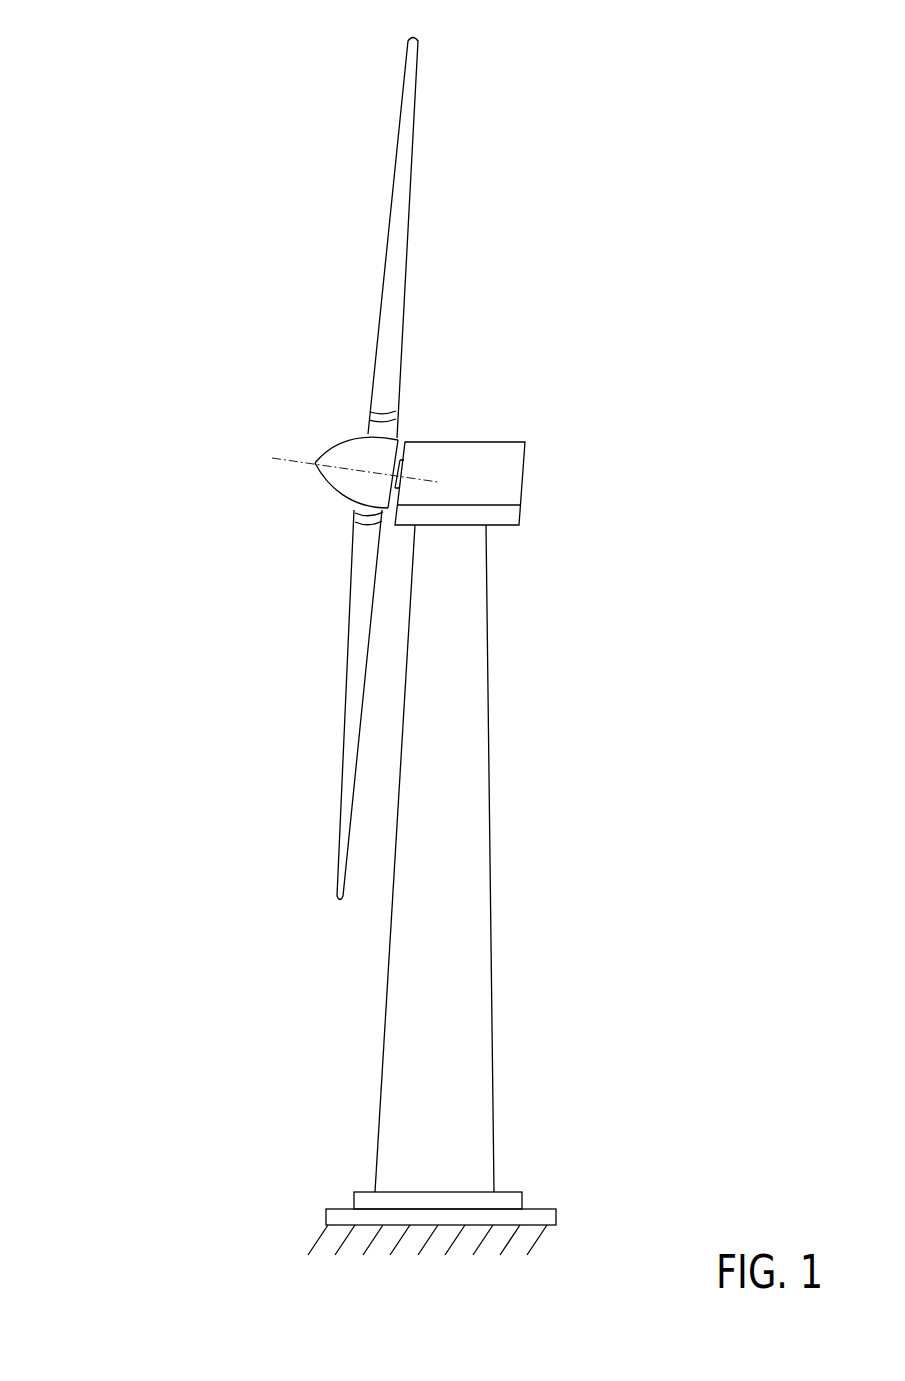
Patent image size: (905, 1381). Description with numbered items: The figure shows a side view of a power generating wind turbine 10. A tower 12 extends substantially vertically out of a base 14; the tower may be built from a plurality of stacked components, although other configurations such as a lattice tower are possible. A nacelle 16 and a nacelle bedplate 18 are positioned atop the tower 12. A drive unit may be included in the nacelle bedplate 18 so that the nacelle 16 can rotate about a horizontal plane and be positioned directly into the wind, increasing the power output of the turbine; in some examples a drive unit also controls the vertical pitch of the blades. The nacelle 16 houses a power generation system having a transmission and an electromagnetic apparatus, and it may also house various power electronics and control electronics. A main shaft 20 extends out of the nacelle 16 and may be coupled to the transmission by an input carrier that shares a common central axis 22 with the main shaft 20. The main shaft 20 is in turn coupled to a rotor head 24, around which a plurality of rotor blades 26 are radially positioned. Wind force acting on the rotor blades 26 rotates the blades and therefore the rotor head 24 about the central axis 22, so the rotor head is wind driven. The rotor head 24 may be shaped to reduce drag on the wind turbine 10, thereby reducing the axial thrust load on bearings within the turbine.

The power generating wind turbine 10 is at (128, 62).
The tower 12 is at (492, 1017).
The base 14 is at (540, 1209).
The nacelle 16 is at (466, 442).
The nacelle bedplate 18 is at (519, 514).
The main shaft 20 is at (404, 443).
The central axis 22 is at (292, 460).
The rotor head 24 is at (344, 443).
The rotor blades 26 is at (377, 343).